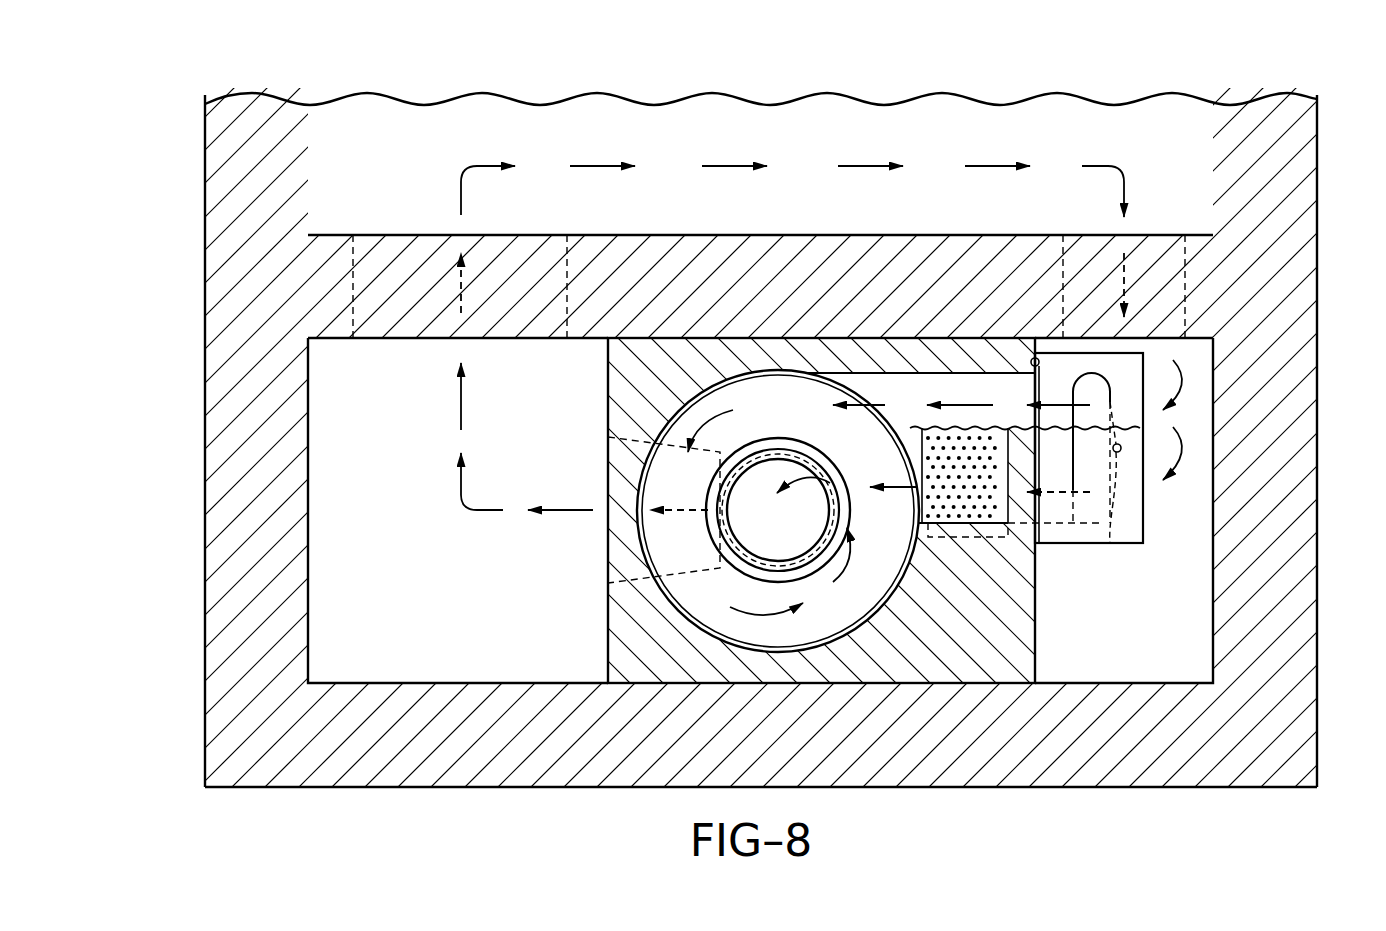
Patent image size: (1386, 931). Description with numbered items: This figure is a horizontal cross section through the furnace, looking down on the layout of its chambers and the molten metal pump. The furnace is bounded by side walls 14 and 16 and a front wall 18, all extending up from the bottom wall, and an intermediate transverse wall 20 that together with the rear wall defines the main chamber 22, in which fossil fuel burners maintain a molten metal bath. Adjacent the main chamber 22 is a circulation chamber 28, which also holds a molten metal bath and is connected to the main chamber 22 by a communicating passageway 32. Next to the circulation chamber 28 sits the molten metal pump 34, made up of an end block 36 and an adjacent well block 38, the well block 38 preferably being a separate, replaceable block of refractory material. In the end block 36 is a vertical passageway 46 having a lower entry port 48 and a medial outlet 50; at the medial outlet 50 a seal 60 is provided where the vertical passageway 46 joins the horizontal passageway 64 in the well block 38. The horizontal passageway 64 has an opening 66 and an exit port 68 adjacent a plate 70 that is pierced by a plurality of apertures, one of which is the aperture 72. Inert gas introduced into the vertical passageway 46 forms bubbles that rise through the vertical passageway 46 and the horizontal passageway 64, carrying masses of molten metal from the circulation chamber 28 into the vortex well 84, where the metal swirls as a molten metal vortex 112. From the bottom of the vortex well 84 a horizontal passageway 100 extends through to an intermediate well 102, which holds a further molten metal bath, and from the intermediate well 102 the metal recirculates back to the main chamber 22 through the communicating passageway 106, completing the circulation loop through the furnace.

The side wall 14 is at (205, 524).
The side wall 16 is at (1317, 620).
The front wall 18 is at (1012, 787).
The intermediate transverse wall 20 is at (613, 262).
The main chamber 22 is at (477, 127).
The circulation chamber 28 is at (1153, 651).
The communicating passageway 32 is at (1157, 247).
The molten metal pump 34 is at (797, 340).
The end block 36 is at (1052, 545).
The well block 38 is at (680, 340).
The vertical passageway 46 is at (1062, 378).
The entry port 48 is at (1112, 545).
The medial outlet 50 is at (1035, 358).
The seal 60 is at (1034, 376).
The horizontal passageway 64 is at (953, 380).
The opening 66 is at (1022, 392).
The exit port 68 is at (893, 423).
The plate 70 is at (987, 525).
The aperture 72 is at (958, 520).
The vortex well 84 is at (657, 413).
The horizontal passageway 100 is at (603, 570).
The intermediate well 102 is at (457, 651).
The communicating passageway 106 is at (390, 338).
The molten metal vortex 112 is at (673, 548).